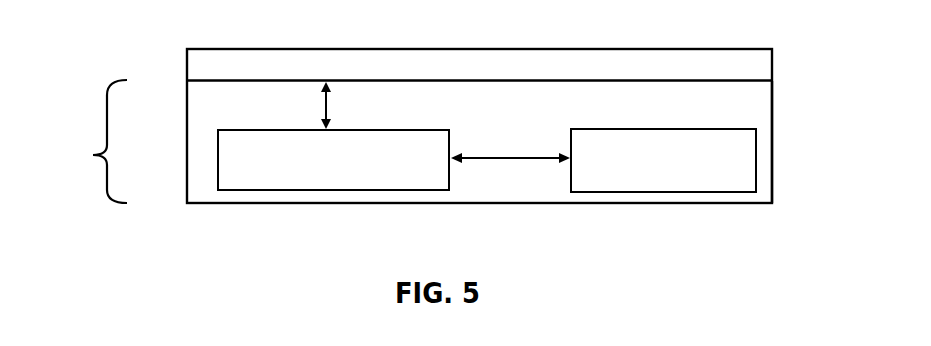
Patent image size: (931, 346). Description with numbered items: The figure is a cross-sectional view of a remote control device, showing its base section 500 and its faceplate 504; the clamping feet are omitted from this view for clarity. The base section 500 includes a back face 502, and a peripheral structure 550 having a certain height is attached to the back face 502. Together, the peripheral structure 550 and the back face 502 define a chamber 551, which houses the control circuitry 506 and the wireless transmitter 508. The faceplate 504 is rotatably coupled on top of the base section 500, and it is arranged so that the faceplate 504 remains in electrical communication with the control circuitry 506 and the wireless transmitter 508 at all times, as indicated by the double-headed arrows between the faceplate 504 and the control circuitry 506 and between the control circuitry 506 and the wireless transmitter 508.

The base section 500 is at (77, 141).
The back face 502 is at (510, 203).
The faceplate 504 is at (773, 64).
The control circuitry 506 is at (285, 190).
The wireless transmitter 508 is at (686, 192).
The peripheral structure 550 is at (773, 172).
The chamber 551 is at (218, 110).